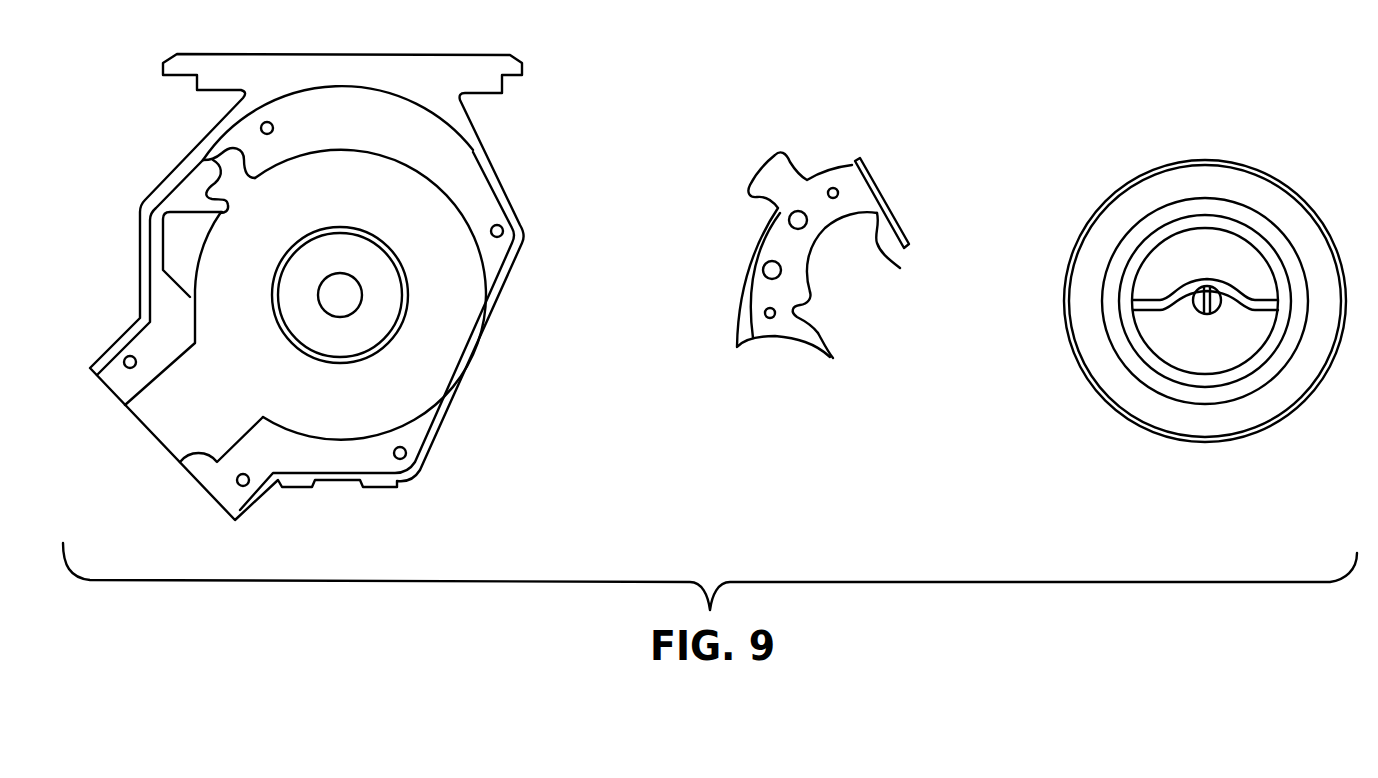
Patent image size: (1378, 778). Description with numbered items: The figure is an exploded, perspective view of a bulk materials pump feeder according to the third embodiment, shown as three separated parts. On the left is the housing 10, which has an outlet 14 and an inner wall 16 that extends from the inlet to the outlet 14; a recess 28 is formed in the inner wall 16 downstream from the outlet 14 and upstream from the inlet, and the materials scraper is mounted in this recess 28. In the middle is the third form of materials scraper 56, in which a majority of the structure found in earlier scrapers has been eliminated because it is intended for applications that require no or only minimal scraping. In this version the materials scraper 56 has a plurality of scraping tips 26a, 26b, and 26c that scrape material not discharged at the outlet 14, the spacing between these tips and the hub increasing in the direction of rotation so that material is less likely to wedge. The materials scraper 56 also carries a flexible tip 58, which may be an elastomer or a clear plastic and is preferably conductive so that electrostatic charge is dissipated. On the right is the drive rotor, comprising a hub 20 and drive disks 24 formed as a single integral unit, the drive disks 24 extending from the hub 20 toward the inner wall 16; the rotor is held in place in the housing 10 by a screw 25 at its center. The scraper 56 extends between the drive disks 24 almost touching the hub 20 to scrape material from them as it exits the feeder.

The housing 10 is at (475, 148).
The outlet 14 is at (180, 462).
The inner wall 16 is at (452, 374).
The hub 20 is at (1238, 263).
The drive disks 24 is at (1207, 182).
The screw 25 is at (1213, 307).
The scraping tip 26a is at (900, 268).
The scraping tip 26b is at (810, 297).
The scraping tip 26c is at (830, 355).
The recess 28 is at (195, 158).
The materials scraper 56 is at (838, 181).
The flexible tip 58 is at (880, 180).